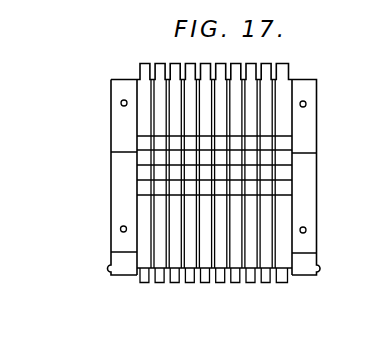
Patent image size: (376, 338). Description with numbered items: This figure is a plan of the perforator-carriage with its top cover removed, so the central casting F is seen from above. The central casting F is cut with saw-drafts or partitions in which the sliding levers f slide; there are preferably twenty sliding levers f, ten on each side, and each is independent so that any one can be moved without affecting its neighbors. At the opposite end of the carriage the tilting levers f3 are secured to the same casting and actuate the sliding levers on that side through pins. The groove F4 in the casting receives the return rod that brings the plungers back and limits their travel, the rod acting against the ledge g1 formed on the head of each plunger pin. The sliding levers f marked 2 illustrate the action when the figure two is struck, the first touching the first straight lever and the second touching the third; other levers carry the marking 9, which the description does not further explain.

The central casting F is at (119, 85).
The groove F4 is at (334, 150).
The sliding levers f is at (147, 61).
The tilting levers f3 is at (267, 274).
The ledge g1 is at (330, 202).
The sliding lever marking for figure two 2 is at (214, 167).
The compartment 9 is at (197, 166).